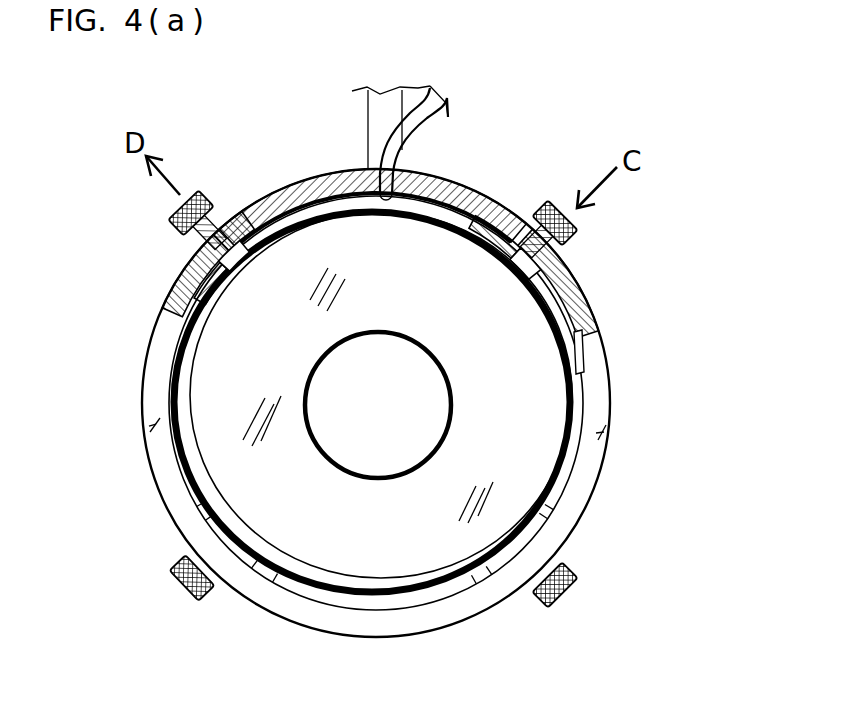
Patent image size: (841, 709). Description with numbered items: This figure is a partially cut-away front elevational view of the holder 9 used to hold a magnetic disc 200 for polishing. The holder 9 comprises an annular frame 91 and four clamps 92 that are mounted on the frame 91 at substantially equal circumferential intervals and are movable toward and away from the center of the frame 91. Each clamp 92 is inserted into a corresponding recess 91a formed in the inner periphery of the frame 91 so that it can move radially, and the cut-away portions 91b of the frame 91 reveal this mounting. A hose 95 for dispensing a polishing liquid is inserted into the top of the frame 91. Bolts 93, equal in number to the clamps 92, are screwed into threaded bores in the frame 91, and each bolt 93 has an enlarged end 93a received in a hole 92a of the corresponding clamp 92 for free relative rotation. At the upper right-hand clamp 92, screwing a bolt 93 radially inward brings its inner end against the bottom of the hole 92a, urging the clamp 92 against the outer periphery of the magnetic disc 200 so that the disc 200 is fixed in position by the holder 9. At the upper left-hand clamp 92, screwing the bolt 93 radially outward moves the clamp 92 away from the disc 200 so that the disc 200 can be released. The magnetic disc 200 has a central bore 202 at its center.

The holder 9 is at (372, 174).
The annular frame 91 is at (431, 403).
The recess 91a is at (639, 265).
The ring body outer portion 91b is at (636, 231).
The clamp 92 is at (382, 400).
The hole 92a is at (441, 275).
The bolt 93 is at (380, 385).
The enlarged end 93a is at (470, 316).
The hose 95 is at (436, 143).
The magnetic disc 200 is at (381, 449).
The central bore 202 is at (391, 509).